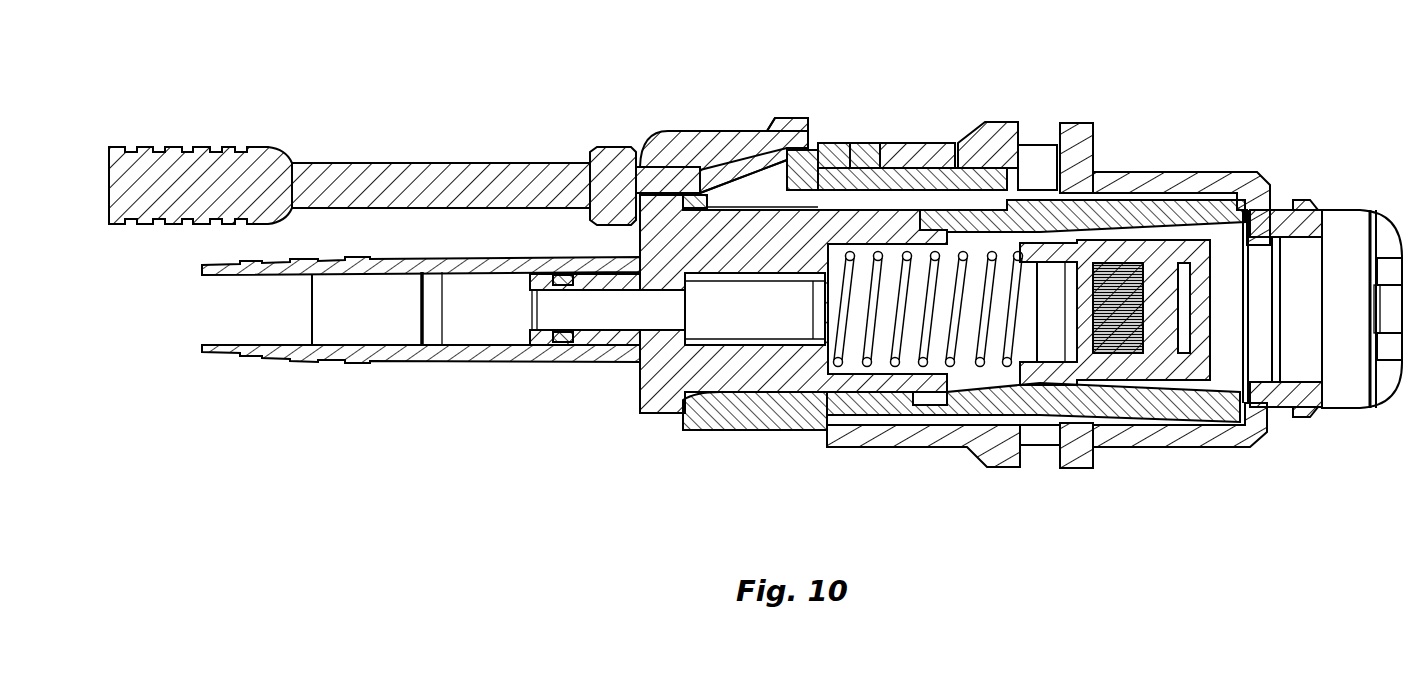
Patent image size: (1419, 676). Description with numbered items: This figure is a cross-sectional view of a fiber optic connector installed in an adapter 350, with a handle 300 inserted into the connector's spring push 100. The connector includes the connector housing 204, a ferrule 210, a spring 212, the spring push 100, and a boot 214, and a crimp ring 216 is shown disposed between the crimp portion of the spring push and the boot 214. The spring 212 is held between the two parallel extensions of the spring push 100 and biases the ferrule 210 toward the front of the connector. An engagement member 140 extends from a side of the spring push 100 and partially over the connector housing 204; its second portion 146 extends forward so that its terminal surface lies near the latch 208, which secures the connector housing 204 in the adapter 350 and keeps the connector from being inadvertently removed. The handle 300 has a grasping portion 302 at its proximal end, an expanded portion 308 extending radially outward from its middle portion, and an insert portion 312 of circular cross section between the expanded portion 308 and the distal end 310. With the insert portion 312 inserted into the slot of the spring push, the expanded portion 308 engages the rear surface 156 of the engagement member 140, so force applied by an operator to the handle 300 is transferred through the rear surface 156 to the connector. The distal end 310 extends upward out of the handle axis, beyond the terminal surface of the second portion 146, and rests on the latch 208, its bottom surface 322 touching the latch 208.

The spring push 100 is at (650, 408).
The engagement member 140 is at (724, 111).
The second portion 146 is at (730, 146).
The rear surface 156 is at (640, 232).
The connector housing 204 is at (760, 428).
The latch 208 is at (823, 165).
The ferrule 210 is at (1183, 245).
The spring 212 is at (967, 365).
The boot 214 is at (410, 362).
The crimp ring 216 is at (485, 340).
The handle 300 is at (372, 145).
The grasping portion 302 is at (203, 145).
The expanded portion 308 is at (603, 146).
The distal end 310 is at (786, 114).
The insert portion 312 is at (673, 165).
The bottom surface 322 is at (777, 230).
The adapter 350 is at (1146, 170).